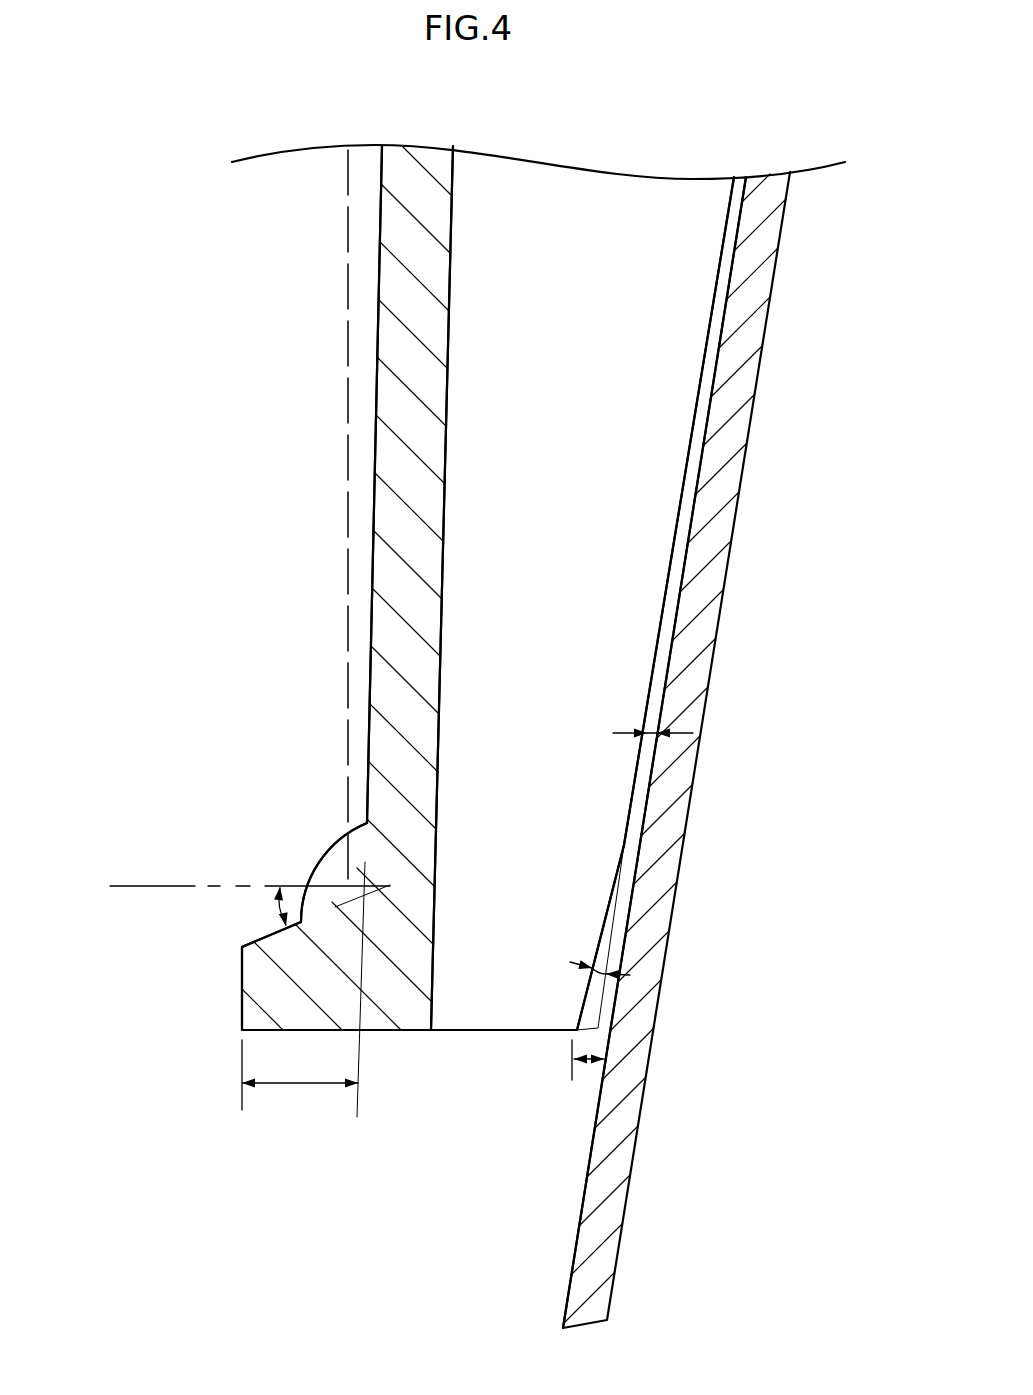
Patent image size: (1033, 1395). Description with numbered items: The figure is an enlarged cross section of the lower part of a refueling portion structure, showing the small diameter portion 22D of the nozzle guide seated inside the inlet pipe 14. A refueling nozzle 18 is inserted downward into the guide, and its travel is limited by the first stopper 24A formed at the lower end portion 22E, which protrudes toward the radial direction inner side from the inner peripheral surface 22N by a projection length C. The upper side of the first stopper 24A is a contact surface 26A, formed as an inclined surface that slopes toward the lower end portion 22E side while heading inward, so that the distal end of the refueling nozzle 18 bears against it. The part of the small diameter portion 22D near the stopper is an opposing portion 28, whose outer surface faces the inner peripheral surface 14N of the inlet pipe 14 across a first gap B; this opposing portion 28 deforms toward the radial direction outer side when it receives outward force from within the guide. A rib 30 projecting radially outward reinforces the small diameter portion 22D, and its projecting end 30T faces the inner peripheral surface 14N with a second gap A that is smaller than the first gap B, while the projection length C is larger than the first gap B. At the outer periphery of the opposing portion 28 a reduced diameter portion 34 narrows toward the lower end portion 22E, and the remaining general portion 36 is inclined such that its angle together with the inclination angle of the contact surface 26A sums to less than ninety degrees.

The inlet pipe 14 is at (610, 1302).
The inner peripheral surface of the inlet pipe 14N is at (636, 820).
The refueling nozzle 18 is at (350, 159).
The small diameter portion 22D is at (388, 572).
The inner peripheral surface of the small diameter portion 22N is at (375, 492).
The lower end portion 22E is at (380, 1032).
The first stopper 24A is at (258, 978).
The contact surface 26A is at (253, 942).
The opposing portion 28 is at (423, 970).
The rib 30 is at (692, 362).
The projecting end of the rib 30T is at (687, 500).
The reduced diameter portion 34 is at (583, 1002).
The general portion 36 is at (622, 920).
The second gap A is at (650, 722).
The first gap B is at (588, 1065).
The projection length C is at (300, 1079).